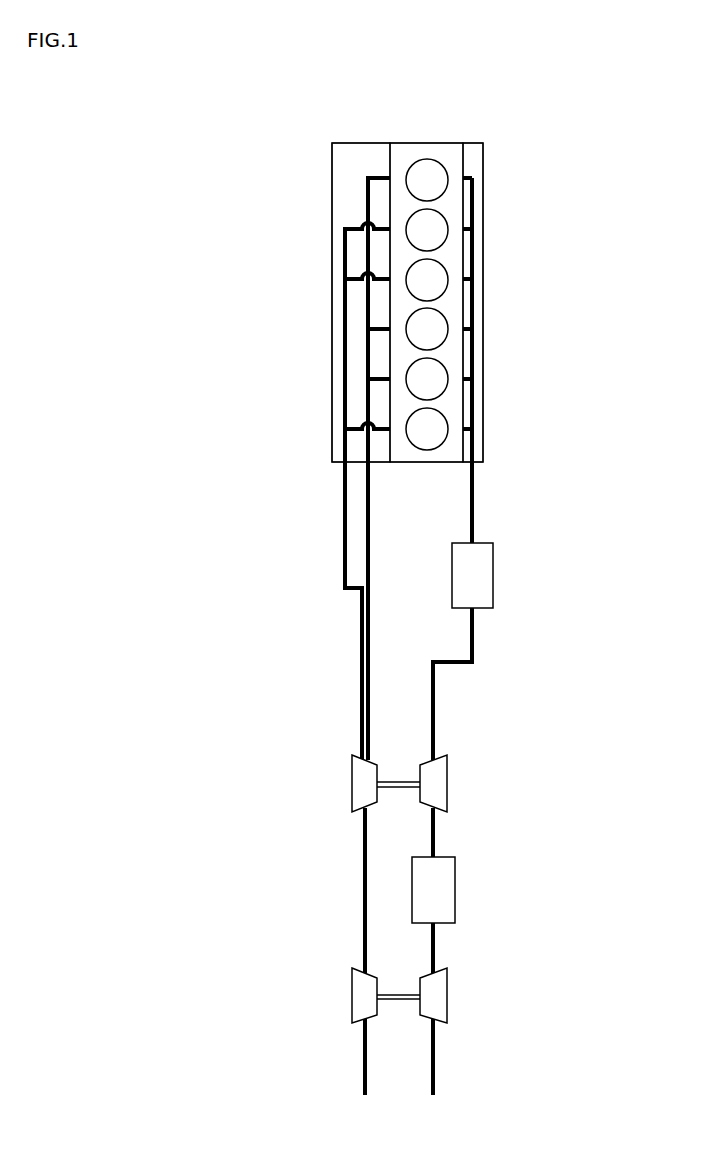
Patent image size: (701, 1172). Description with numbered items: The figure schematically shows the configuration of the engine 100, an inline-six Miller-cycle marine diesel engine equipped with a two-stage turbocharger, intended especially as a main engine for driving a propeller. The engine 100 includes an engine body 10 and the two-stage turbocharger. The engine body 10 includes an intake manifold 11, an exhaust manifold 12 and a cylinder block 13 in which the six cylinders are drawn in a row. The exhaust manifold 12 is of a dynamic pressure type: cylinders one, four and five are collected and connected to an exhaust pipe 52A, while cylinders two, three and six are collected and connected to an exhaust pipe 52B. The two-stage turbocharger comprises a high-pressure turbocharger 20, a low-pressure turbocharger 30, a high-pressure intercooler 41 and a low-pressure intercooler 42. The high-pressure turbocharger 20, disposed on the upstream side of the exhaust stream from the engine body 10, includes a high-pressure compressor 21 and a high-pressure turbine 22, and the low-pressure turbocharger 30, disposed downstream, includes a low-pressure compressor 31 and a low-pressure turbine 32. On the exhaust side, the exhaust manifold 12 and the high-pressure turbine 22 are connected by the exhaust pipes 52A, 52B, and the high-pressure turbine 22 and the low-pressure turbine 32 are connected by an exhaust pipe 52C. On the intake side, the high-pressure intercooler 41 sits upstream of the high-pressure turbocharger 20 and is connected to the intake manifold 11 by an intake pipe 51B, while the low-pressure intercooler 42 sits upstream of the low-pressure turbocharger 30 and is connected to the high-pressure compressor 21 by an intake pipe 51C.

The engine 100 is at (445, 588).
The engine body 10 is at (452, 280).
The intake manifold 11 is at (472, 142).
The exhaust manifold 12 is at (360, 142).
The cylinder block 13 is at (425, 142).
The high-pressure turbocharger 20 is at (414, 781).
The high-pressure compressor 21 is at (447, 758).
The high-pressure turbine 22 is at (352, 762).
The low-pressure turbocharger 30 is at (413, 1000).
The low-pressure compressor 31 is at (447, 975).
The low-pressure turbine 32 is at (352, 976).
The high-pressure intercooler 41 is at (493, 582).
The low-pressure intercooler 42 is at (455, 890).
The intake pipe 51B is at (475, 492).
The intake pipe 51C is at (435, 835).
The exhaust pipe 52A is at (368, 203).
The exhaust pipe 52B is at (345, 370).
The exhaust pipe 52C is at (362, 850).